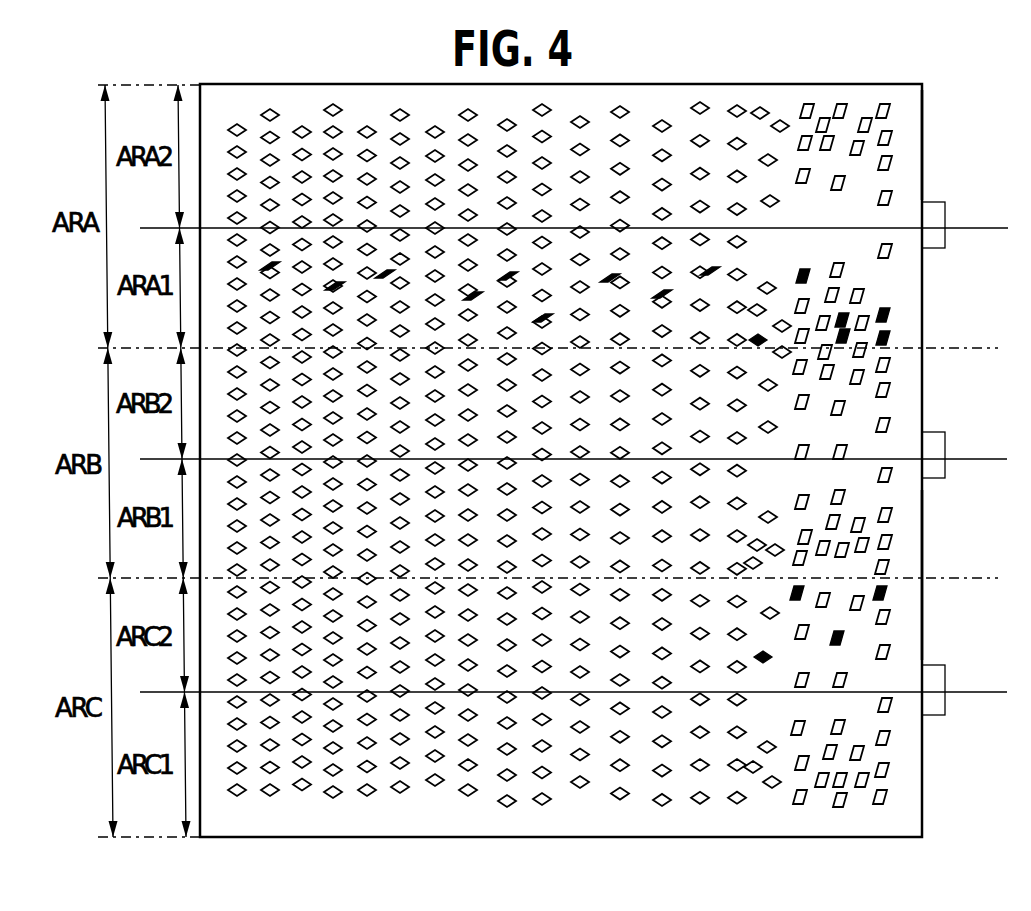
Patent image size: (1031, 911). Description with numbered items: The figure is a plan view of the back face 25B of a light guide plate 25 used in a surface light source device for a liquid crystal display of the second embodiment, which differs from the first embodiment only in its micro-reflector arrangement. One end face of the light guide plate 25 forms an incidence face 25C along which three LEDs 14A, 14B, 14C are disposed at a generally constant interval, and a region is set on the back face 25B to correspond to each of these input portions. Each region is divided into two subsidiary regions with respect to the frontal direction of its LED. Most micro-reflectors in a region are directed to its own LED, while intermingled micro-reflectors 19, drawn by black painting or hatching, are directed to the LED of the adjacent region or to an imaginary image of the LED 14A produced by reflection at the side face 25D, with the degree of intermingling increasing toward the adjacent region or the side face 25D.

The side face 25D is at (921, 84).
The back face 25B is at (910, 132).
The light guide plate 25 is at (905, 166).
The LED 14A is at (936, 216).
The LED 14B is at (938, 447).
The LED 14C is at (936, 680).
The micro-reflectors 19 is at (892, 314).
The incidence face 25C is at (922, 526).